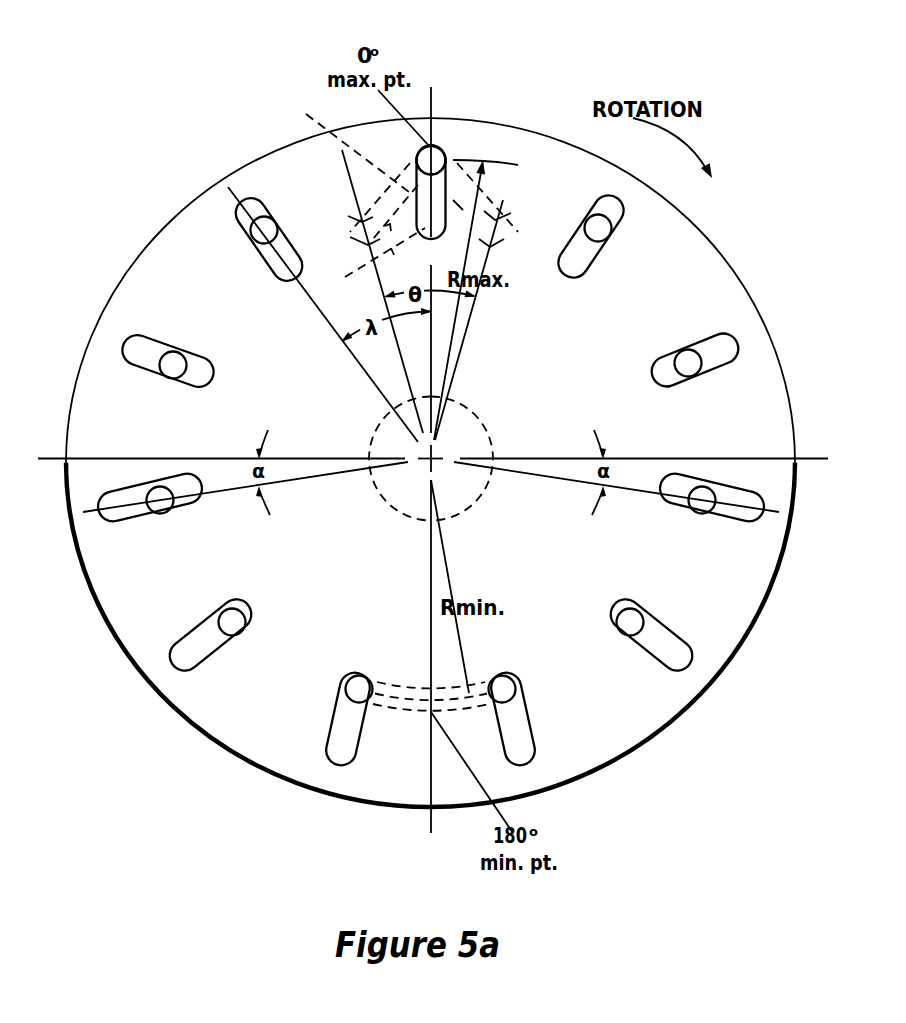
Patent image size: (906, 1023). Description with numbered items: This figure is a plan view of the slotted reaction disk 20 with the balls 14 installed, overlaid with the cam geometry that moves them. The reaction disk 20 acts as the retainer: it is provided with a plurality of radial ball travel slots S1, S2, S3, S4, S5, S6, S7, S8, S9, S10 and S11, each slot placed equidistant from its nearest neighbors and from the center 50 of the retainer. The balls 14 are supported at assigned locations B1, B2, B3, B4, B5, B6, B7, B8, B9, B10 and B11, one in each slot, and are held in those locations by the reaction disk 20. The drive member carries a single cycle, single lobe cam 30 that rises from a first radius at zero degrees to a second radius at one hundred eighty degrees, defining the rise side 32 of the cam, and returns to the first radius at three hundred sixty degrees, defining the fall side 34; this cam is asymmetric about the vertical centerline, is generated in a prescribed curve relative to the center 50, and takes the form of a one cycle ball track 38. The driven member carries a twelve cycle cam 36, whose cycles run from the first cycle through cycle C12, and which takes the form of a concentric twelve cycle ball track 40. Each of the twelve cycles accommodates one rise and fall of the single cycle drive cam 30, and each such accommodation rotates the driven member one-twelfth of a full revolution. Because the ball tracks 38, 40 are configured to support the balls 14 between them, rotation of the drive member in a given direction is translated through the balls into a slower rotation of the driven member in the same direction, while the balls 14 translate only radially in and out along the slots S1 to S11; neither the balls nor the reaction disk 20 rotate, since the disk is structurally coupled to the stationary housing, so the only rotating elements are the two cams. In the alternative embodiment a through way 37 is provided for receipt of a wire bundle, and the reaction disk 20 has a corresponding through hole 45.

The balls 14 is at (440, 147).
The reaction disk 20 is at (178, 212).
The rise side of the cam 32 is at (172, 706).
The fall side of the cam 34 is at (703, 693).
The twelve cycle cam 36 is at (384, 189).
The concentric twelve cycle ball track 40 is at (384, 189).
The single cycle cam 30 is at (405, 765).
The one cycle ball track 38 is at (383, 707).
The through hole 45 is at (385, 512).
The through way 37 is at (487, 513).
The center 50 is at (487, 412).
The twelfth cam cycle C12 is at (375, 291).
The ball location B1 is at (281, 223).
The radial ball travel slot S1 is at (269, 252).
The ball location B2 is at (180, 353).
The radial ball travel slot S2 is at (184, 363).
The ball location B3 is at (142, 489).
The radial ball travel slot S3 is at (160, 504).
The ball location B4 is at (216, 614).
The radial ball travel slot S4 is at (228, 634).
The ball location B5 is at (338, 696).
The radial ball travel slot S5 is at (350, 706).
The ball location B6 is at (526, 699).
The radial ball travel slot S6 is at (510, 706).
The ball location B7 is at (653, 616).
The radial ball travel slot S7 is at (634, 635).
The ball location B8 is at (715, 489).
The radial ball travel slot S8 is at (698, 498).
The ball location B9 is at (687, 348).
The radial ball travel slot S9 is at (679, 361).
The ball location B10 is at (582, 215).
The radial ball travel slot S10 is at (590, 251).
The ball location B11 is at (458, 152).
The radial ball travel slot S11 is at (430, 205).